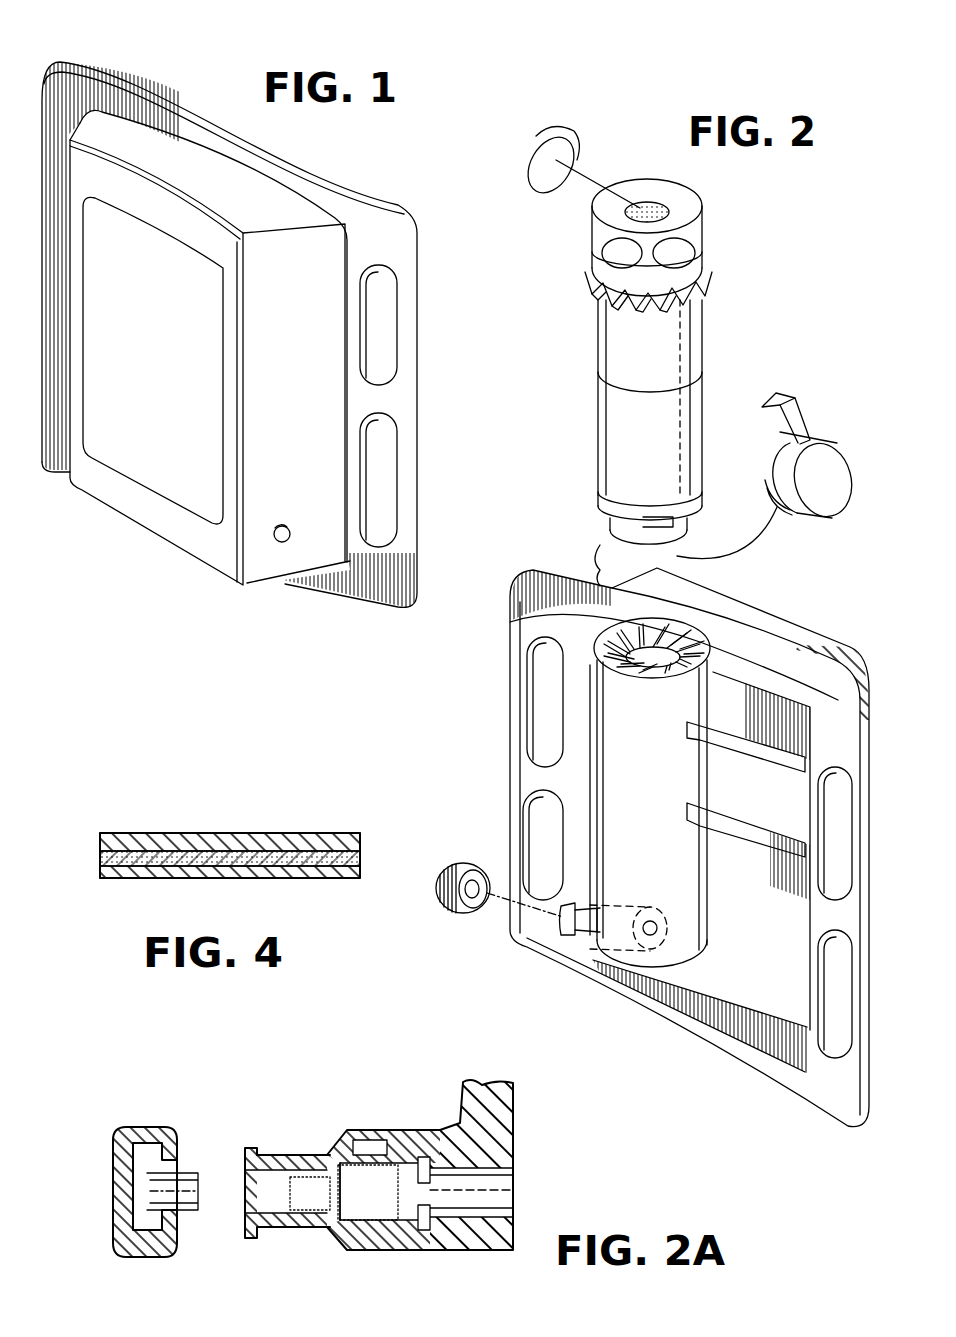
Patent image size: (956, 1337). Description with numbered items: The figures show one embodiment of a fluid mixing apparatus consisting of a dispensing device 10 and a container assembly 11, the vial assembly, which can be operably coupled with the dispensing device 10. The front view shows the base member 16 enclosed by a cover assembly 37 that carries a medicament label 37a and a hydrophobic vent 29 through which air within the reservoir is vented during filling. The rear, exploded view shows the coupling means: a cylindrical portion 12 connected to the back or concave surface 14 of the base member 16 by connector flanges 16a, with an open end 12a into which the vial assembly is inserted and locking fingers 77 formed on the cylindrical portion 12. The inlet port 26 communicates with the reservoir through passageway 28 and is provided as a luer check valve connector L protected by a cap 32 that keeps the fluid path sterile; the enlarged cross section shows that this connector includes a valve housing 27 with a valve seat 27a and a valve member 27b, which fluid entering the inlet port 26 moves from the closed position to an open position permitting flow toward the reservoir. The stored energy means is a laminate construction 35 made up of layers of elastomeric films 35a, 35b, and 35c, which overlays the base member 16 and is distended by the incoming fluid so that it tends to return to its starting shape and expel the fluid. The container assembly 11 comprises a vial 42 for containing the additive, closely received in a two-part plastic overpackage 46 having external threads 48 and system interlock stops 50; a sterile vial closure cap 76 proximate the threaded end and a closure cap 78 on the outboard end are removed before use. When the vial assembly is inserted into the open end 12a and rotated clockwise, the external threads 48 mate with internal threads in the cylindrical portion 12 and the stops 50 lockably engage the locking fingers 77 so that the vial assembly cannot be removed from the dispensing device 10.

In FIG. 1, the dispensing device 10 is at (122, 70).
In FIG. 2, the dispensing device 10 is at (770, 580).
In FIG. 2, the container assembly 11 is at (651, 382).
In FIG. 2, the cylindrical portion 12 is at (666, 818).
In FIG. 2, the open end 12a is at (648, 668).
In FIG. 1, the concave surface 14 is at (270, 174).
In FIG. 2, the concave surface 14 is at (773, 980).
In FIG. 1, the base member 16 is at (380, 185).
In FIG. 2, the connector flanges 16a is at (767, 823).
In FIG. 2, the inlet port 26 is at (560, 918).
In FIG. 2A, the inlet port 26 is at (243, 1222).
In FIG. 2A, the valve housing 27 is at (383, 1191).
In FIG. 2A, the valve seat 27a is at (333, 1163).
In FIG. 2A, the valve member 27b is at (370, 1200).
In FIG. 2, the passageway 28 is at (633, 952).
In FIG. 1, the vent 29 is at (283, 545).
In FIG. 2, the cap 32 is at (447, 912).
In FIG. 2A, the cap 32 is at (113, 1200).
In FIG. 4, the laminate construction 35 is at (230, 852).
In FIG. 4, the elastomeric film 35a is at (143, 840).
In FIG. 4, the elastomeric film 35b is at (305, 858).
In FIG. 4, the elastomeric film 35c is at (283, 868).
In FIG. 1, the cover assembly 37 is at (212, 560).
In FIG. 1, the medicament label 37a is at (165, 487).
In FIG. 2, the vial 42 is at (598, 333).
In FIG. 2, the overpackage 46 is at (608, 415).
In FIG. 2, the external threads 48 is at (600, 511).
In FIG. 2, the system interlock stops 50 is at (702, 283).
In FIG. 2, the sterile vial closure cap 76 is at (829, 440).
In FIG. 2, the locking fingers 77 is at (622, 632).
In FIG. 2, the closure cap 78 is at (567, 150).
In FIG. 2, the luer check valve connector L is at (563, 930).
In FIG. 2A, the luer check valve connector L is at (393, 1108).